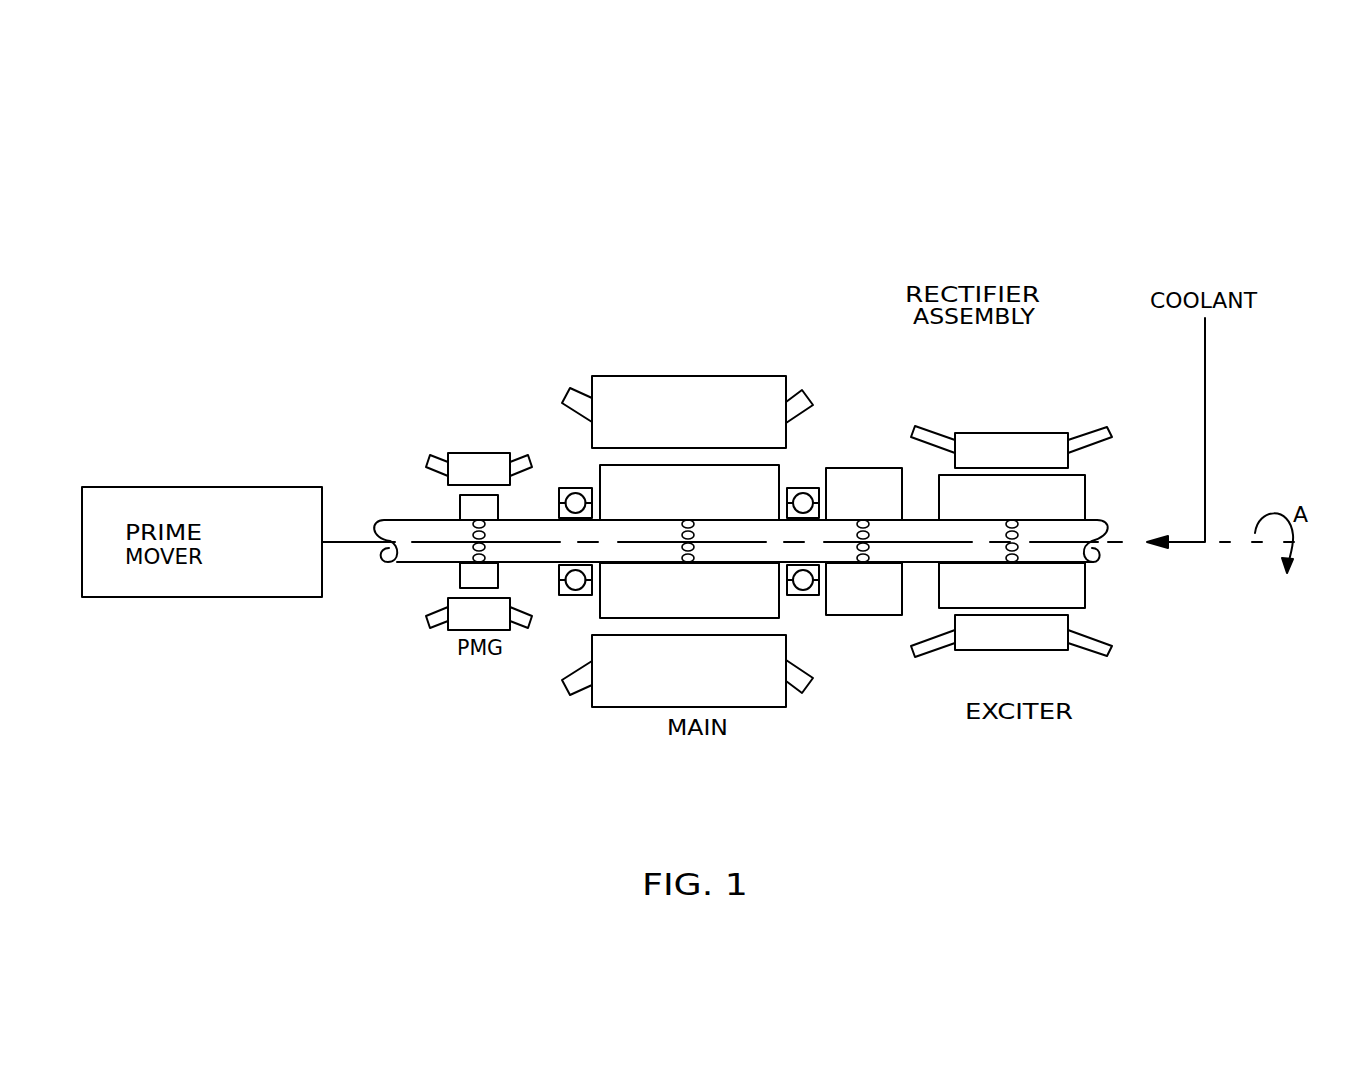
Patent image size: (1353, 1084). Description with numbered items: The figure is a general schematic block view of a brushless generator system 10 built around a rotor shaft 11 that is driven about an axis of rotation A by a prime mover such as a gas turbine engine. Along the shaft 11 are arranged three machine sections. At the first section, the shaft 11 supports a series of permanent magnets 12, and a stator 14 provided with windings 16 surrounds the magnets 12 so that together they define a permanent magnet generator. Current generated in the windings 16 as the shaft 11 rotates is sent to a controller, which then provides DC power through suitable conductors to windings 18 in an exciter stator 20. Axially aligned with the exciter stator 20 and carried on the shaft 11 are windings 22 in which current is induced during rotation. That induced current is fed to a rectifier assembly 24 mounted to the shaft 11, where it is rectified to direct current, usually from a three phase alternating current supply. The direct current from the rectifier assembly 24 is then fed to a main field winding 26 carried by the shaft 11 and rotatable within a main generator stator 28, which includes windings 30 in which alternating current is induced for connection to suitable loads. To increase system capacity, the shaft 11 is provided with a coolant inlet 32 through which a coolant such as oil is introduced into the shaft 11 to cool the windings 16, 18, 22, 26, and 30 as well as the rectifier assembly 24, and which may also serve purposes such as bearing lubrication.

The brushless generator system 10 is at (1216, 238).
The rotor shaft 11 is at (408, 563).
The permanent magnets 12 is at (458, 512).
The stator 14 is at (480, 460).
The windings 16 is at (448, 458).
The windings 18 is at (1082, 640).
The exciter stator 20 is at (999, 643).
The windings 22 is at (1076, 497).
The rectifier assembly 24 is at (876, 450).
The main field winding 26 is at (768, 473).
The main generator stator 28 is at (689, 383).
The windings 30 is at (793, 398).
The coolant inlet 32 is at (1103, 548).